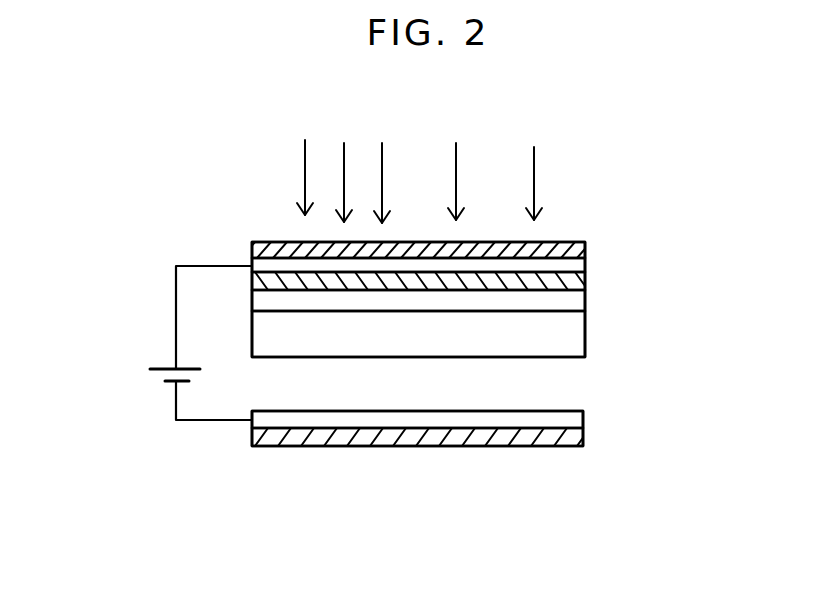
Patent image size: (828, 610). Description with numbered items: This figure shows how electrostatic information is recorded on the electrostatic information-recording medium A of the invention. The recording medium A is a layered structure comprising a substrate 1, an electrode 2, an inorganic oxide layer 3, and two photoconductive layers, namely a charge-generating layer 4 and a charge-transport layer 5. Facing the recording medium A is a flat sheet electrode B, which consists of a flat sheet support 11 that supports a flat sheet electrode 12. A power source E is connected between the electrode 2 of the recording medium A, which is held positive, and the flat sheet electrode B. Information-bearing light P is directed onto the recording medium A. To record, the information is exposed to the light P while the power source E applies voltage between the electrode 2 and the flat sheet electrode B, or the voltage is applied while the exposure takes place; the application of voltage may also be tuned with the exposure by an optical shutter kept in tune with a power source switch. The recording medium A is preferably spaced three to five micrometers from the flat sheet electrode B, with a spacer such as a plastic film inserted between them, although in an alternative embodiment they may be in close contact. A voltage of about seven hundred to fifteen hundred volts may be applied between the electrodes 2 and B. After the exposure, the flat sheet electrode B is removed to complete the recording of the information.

The substrate 1 is at (585, 247).
The electrode 2 is at (585, 263).
The inorganic oxide layer 3 is at (585, 283).
The charge-generating layer 4 is at (585, 301).
The charge-transport layer 5 is at (585, 340).
The flat sheet support 11 is at (583, 438).
The flat sheet electrode 12 is at (583, 420).
The electrostatic information-recording medium A is at (247, 247).
The flat sheet electrode B is at (282, 455).
The power source E is at (145, 378).
The information-bearing light P is at (563, 172).